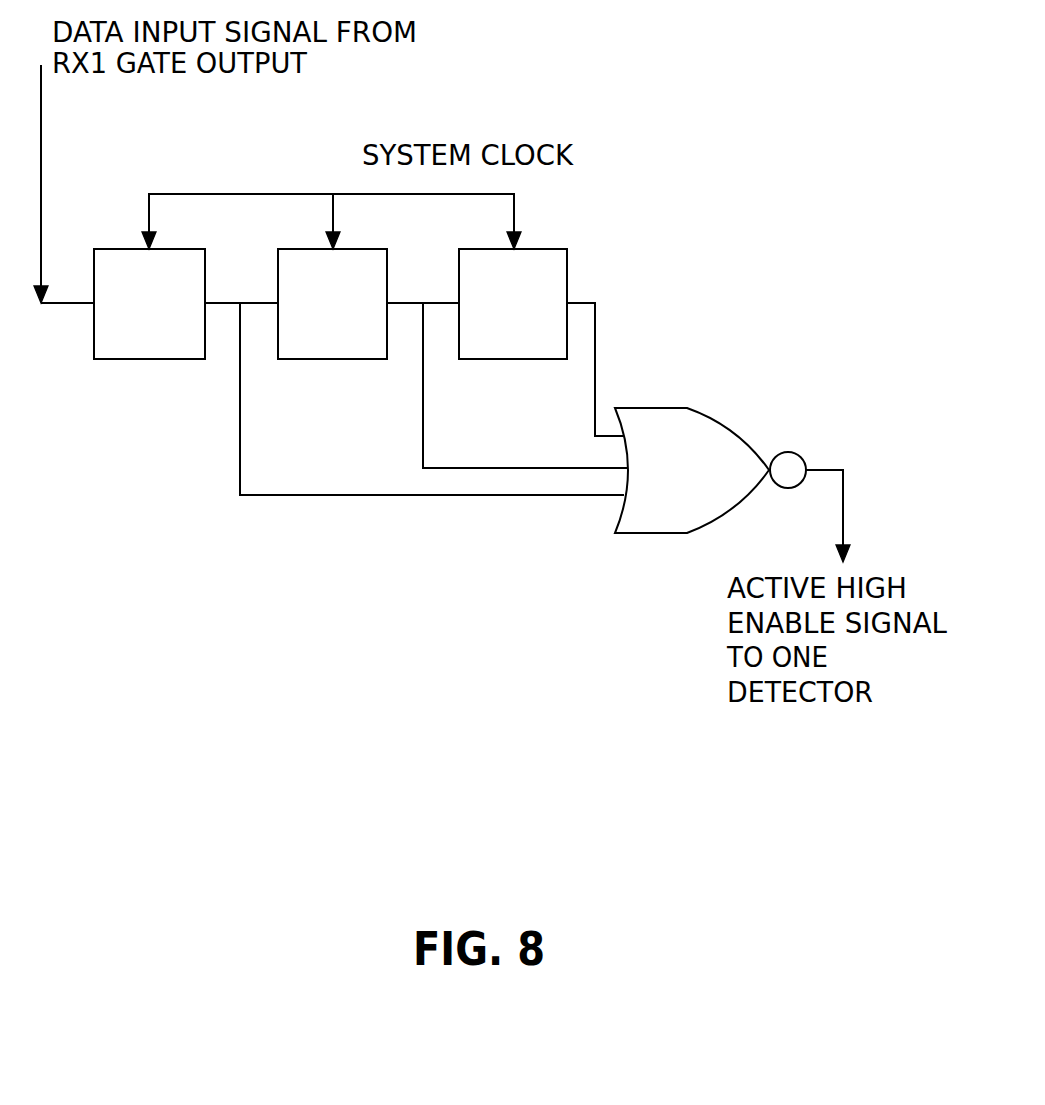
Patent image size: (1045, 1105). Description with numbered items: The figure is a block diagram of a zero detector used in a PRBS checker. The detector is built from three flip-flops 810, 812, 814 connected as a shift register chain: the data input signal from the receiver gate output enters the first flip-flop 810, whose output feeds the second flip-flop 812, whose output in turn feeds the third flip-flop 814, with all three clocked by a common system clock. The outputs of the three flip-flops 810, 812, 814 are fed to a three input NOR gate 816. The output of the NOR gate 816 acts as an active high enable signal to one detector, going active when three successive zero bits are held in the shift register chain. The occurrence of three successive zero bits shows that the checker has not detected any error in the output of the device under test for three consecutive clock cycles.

The flip-flop 810 is at (183, 249).
The flip-flop 812 is at (357, 249).
The flip-flop 814 is at (531, 249).
The three input NOR gate 816 is at (680, 408).